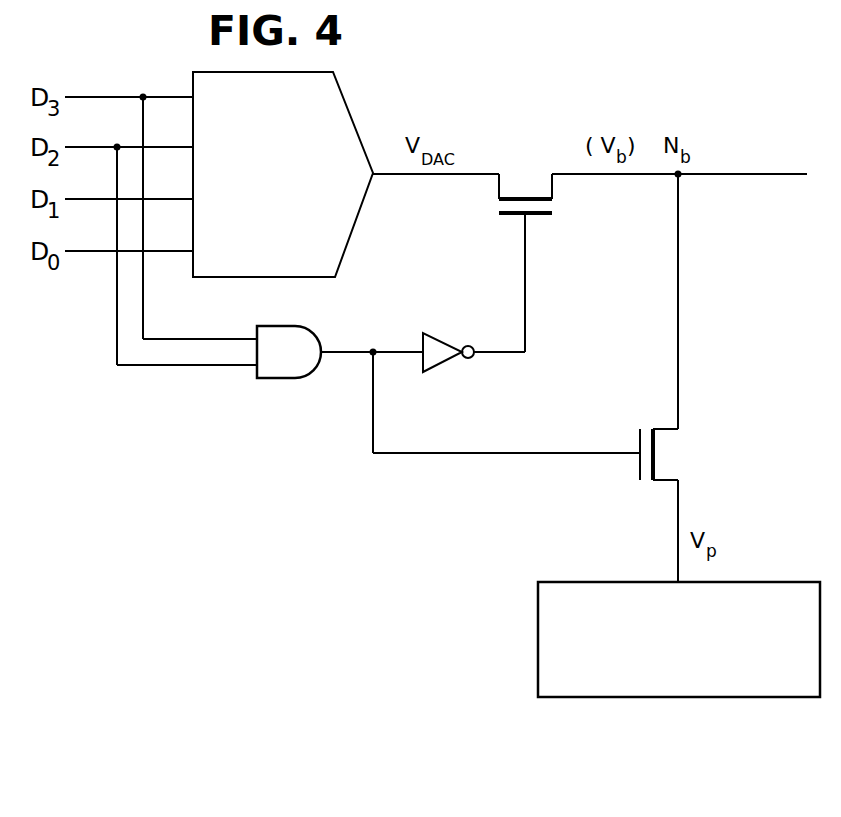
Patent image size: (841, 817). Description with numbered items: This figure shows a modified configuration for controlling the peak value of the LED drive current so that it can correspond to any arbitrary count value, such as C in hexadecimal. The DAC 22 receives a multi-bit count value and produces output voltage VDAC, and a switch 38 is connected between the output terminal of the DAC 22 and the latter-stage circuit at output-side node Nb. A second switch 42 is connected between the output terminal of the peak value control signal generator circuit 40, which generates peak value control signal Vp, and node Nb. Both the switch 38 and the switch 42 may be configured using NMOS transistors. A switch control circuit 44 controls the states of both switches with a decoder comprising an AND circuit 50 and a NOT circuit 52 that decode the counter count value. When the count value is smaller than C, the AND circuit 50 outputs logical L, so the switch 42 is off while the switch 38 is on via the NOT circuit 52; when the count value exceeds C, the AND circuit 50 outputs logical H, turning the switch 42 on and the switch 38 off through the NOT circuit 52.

The DAC 22 is at (294, 211).
The switch 38 is at (538, 215).
The AND circuit 50 is at (283, 380).
The NOT circuit 52 is at (443, 362).
The switch control circuit 44 is at (431, 519).
The switch 42 is at (638, 467).
The peak value control signal generator circuit 40 is at (703, 697).